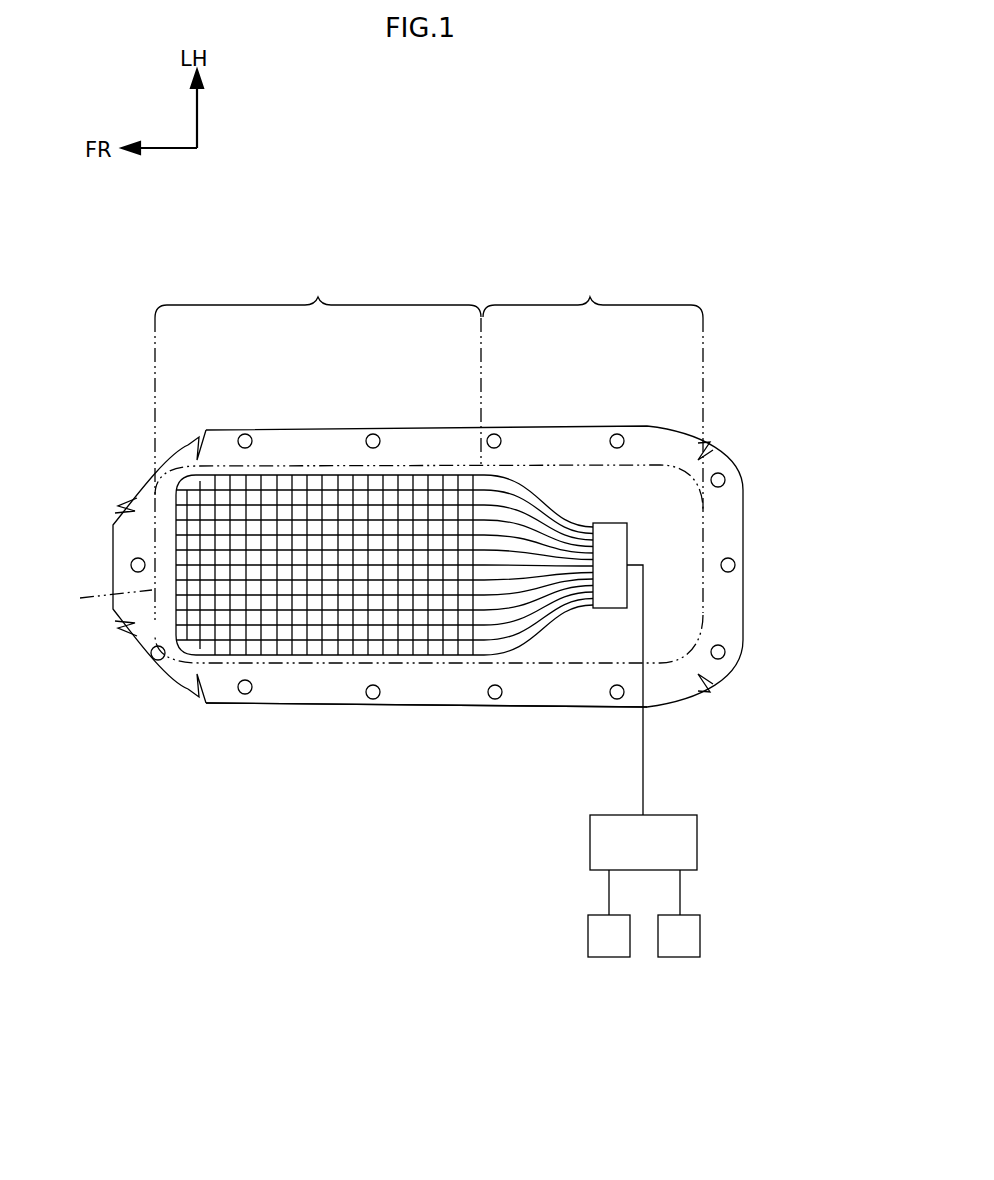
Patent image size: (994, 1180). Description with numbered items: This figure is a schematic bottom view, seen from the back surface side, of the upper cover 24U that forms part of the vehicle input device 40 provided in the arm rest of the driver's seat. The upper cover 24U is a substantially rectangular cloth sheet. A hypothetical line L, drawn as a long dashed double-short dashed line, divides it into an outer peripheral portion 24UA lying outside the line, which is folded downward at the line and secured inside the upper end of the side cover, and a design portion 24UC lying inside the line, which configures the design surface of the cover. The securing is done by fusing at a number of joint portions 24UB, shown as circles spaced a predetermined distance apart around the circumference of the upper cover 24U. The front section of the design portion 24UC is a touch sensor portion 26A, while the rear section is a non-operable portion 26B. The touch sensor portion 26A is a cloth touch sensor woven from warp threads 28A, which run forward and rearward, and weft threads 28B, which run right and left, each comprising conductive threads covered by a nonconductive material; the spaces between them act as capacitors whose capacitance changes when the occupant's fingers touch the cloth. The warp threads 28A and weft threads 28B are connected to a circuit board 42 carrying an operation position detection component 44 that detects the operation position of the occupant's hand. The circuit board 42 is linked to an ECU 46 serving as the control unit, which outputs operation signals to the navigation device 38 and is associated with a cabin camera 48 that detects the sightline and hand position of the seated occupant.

The vehicle input device 40 is at (741, 266).
The upper cover 24U is at (109, 349).
The outer peripheral portion 24UA is at (313, 690).
The joint portions 24UB is at (373, 434).
The design portion 24UC is at (567, 648).
The touch sensor portion 26A is at (318, 446).
The non-operable portion 26B is at (593, 443).
The warp threads 28A is at (208, 562).
The weft threads 28B is at (181, 543).
The circuit board 42 is at (608, 523).
The operation position detection component 44 is at (635, 690).
The ECU 46 is at (698, 843).
The cabin camera 48 is at (606, 957).
The navigation device 38 is at (676, 957).
The hypothetical line L is at (82, 598).